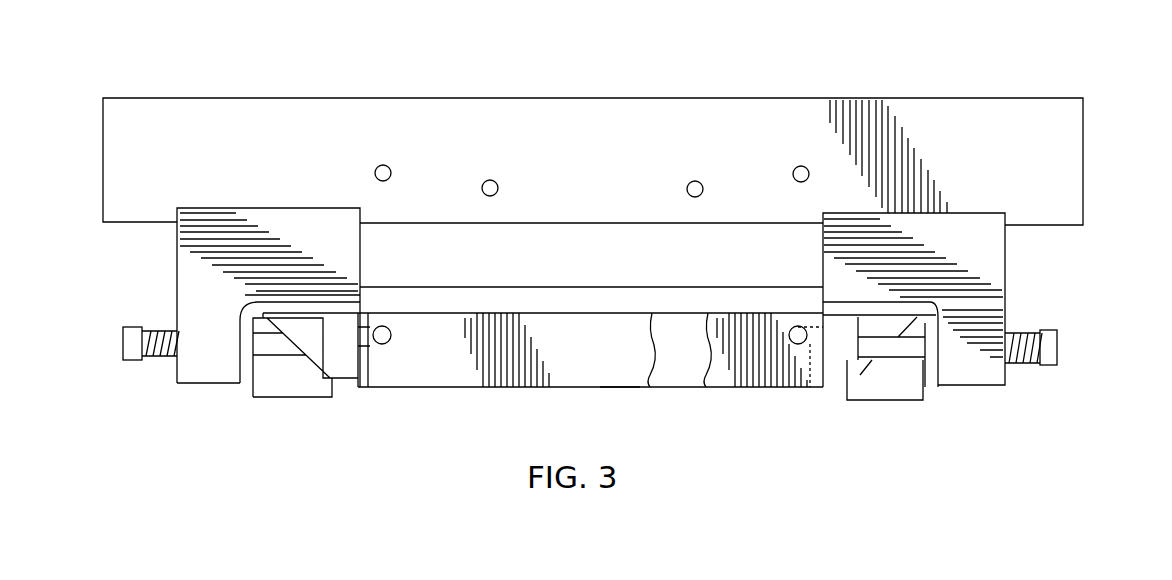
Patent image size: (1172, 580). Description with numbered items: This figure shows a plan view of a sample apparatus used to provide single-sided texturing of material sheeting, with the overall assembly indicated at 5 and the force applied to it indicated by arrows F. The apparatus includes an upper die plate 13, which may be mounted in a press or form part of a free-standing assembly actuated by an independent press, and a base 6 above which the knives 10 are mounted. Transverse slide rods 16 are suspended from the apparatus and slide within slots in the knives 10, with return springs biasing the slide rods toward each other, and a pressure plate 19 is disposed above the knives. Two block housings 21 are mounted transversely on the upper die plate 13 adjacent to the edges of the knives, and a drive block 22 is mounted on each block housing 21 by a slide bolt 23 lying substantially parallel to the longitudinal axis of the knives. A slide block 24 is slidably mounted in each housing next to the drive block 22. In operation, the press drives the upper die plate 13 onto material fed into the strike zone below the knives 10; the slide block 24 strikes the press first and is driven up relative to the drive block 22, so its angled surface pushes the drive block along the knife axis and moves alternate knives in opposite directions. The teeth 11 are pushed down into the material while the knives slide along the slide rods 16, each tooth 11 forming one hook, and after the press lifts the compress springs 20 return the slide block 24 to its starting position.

The workpiece clamping device 5 is at (918, 35).
The base 6 is at (638, 430).
The knives 10 is at (750, 389).
The teeth 11 is at (683, 389).
The upper die plate 13 is at (1083, 151).
The transverse slide rods 16 is at (382, 345).
The pressure plate 19 is at (388, 302).
The compress springs 20 is at (1022, 333).
The block housings 21 is at (1007, 297).
The drive block 22 is at (838, 386).
The slide bolt 23 is at (1057, 350).
The slide block 24 is at (875, 403).
The clamping force F is at (304, 430).